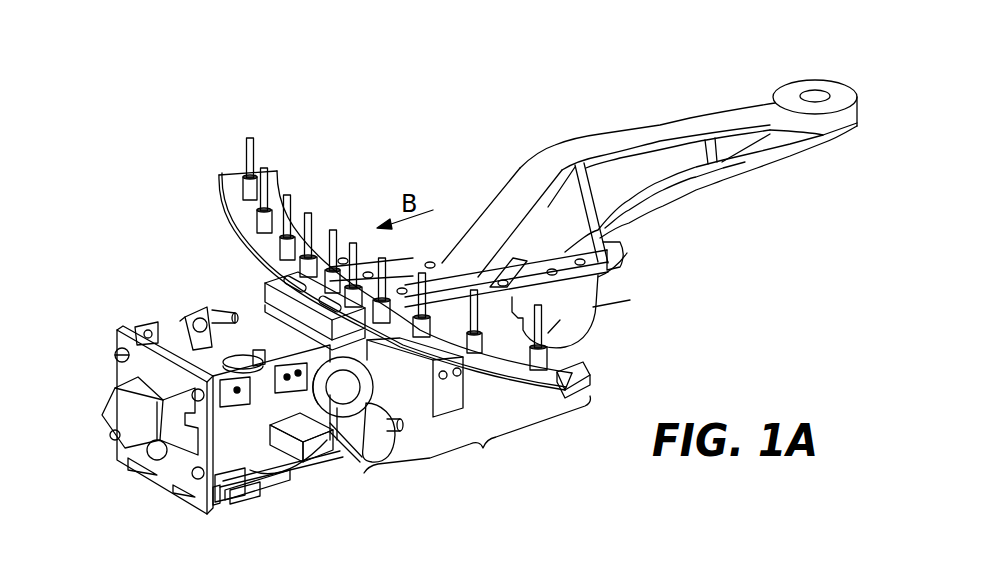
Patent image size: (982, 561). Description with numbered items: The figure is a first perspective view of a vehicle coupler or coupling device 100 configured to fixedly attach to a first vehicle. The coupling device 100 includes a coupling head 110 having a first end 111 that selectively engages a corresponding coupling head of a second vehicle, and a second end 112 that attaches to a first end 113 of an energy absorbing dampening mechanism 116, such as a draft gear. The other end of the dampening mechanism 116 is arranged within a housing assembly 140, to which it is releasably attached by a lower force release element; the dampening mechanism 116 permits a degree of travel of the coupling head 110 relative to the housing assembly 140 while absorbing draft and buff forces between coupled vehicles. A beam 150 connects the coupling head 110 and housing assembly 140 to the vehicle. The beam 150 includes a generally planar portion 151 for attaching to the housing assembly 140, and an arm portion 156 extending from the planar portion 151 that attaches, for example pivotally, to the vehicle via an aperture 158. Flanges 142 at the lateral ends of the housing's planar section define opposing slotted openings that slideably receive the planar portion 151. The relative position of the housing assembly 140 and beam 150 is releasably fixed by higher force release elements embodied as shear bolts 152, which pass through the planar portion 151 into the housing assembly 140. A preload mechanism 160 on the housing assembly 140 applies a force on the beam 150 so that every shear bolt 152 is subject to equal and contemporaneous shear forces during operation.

The coupling device 100 is at (400, 166).
The coupling head 110 is at (172, 351).
The first end 111 is at (138, 358).
The second end 112 is at (300, 345).
The first end 113 is at (353, 452).
The dampening mechanism 116 is at (404, 312).
The housing assembly 140 is at (583, 327).
The flanges 142 is at (392, 255).
The beam 150 is at (630, 137).
The planar portion 151 is at (623, 218).
The shear bolts 152 is at (447, 240).
The arm portion 156 is at (548, 207).
The aperture 158 is at (810, 96).
The preload mechanism 160 is at (643, 254).